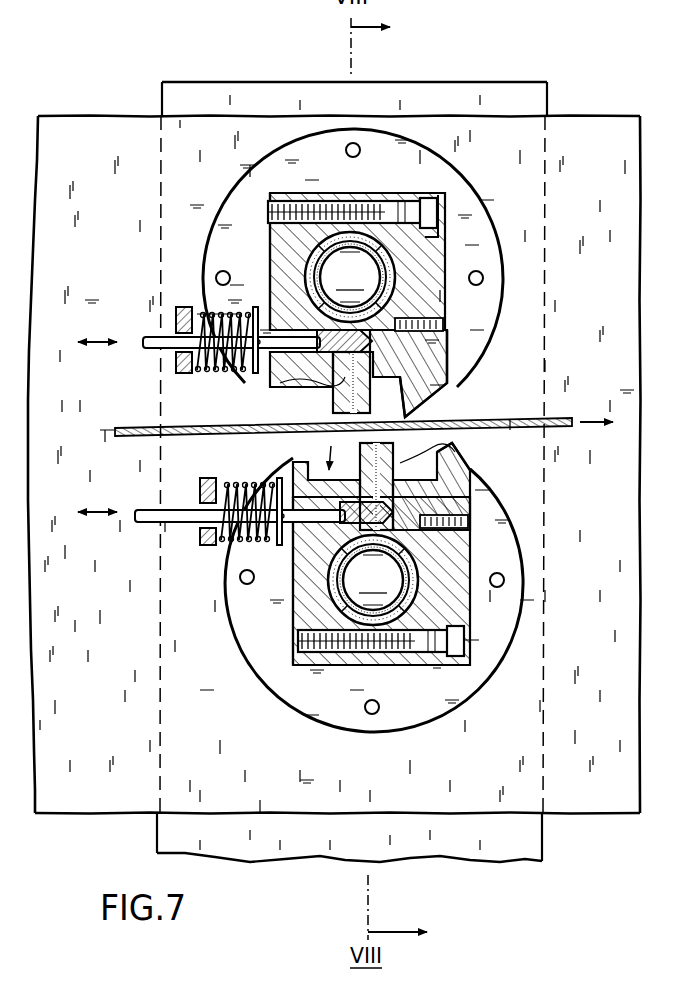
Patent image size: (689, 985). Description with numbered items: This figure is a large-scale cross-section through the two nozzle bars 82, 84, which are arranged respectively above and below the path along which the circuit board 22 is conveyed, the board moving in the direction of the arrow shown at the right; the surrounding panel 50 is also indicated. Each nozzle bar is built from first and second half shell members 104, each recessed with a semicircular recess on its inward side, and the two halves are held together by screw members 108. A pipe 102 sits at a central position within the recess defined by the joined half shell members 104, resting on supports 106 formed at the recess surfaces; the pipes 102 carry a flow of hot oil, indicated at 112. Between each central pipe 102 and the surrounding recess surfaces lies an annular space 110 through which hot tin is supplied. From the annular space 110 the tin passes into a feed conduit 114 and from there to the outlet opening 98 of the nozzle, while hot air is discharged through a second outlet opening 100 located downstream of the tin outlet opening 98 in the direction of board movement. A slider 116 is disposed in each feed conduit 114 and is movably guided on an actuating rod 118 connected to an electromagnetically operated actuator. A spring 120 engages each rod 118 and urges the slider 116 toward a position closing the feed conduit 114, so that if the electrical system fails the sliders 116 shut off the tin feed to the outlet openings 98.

The circuit board 22 is at (557, 413).
The panel 50 is at (532, 846).
The nozzle bar 82 is at (463, 207).
The nozzle bar 84 is at (493, 647).
The outlet opening 98 is at (352, 404).
The outlet opening 100 is at (443, 400).
The pipe 102 is at (300, 257).
The half shell member 104 is at (283, 233).
The support 106 is at (390, 297).
The screw member 108 is at (401, 208).
The annular space 110 is at (390, 257).
The hot oil flow 112 is at (361, 428).
The feed conduit 114 is at (335, 378).
The slider 116 is at (395, 513).
The actuating rod 118 is at (143, 346).
The spring 120 is at (212, 372).